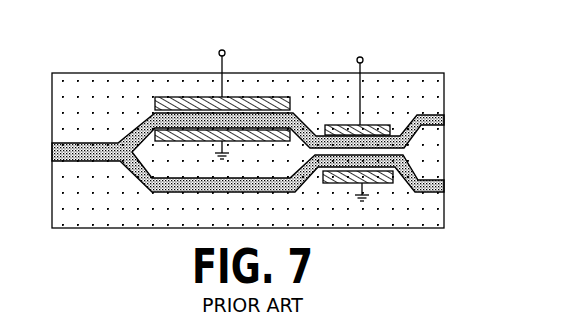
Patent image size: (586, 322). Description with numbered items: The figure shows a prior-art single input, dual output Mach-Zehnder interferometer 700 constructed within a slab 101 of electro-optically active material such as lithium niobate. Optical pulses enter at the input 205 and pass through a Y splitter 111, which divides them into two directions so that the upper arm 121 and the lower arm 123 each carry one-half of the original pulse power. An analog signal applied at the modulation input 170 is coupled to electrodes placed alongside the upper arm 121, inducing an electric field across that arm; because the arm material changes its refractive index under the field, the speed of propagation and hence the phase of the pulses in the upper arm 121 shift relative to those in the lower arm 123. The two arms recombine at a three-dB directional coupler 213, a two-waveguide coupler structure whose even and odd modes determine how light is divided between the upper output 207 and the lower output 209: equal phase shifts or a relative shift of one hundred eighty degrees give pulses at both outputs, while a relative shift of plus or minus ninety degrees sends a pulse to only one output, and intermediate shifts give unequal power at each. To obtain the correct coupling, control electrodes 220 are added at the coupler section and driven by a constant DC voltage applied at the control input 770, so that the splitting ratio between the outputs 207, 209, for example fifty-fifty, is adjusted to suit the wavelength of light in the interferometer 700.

The Mach-Zehnder interferometer 700 is at (166, 36).
The slab of electro-optically active material 101 is at (115, 73).
The input 205 is at (50, 152).
The upper arm 121 is at (155, 113).
The lower arm 123 is at (222, 193).
The Y splitter 111 is at (118, 167).
The modulation input 170 is at (226, 67).
The control input 770 is at (357, 71).
The control electrodes 220 is at (350, 124).
The directional coupler 213 is at (385, 115).
The upper output 207 is at (446, 118).
The lower output 209 is at (446, 186).